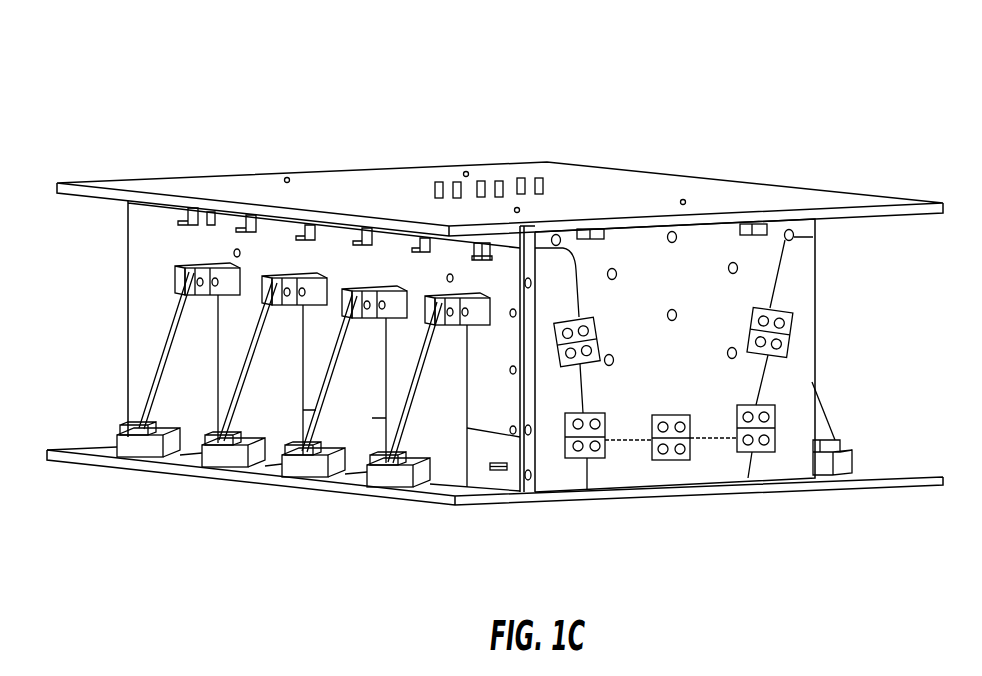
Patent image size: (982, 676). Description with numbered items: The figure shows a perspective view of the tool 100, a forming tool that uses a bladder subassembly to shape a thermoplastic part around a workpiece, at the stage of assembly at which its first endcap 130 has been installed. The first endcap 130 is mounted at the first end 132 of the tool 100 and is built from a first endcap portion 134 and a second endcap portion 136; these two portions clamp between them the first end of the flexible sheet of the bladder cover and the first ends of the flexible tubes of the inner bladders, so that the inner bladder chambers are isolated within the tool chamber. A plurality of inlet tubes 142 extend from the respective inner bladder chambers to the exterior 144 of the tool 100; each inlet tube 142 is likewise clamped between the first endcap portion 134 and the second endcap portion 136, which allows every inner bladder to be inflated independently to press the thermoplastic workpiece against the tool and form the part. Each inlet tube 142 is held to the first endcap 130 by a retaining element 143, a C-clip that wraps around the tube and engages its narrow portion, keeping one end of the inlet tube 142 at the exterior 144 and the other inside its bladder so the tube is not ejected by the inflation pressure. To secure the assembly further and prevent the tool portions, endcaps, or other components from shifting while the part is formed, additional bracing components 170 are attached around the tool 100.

The tool 100 is at (320, 52).
The first endcap 130 is at (757, 280).
The first end 132 is at (800, 322).
The first endcap portion 134 is at (735, 375).
The second endcap portion 136 is at (790, 420).
The inlet tube 142 is at (655, 460).
The retaining element 143 is at (672, 460).
The exterior 144 is at (722, 574).
The bracing components 170 is at (248, 400).